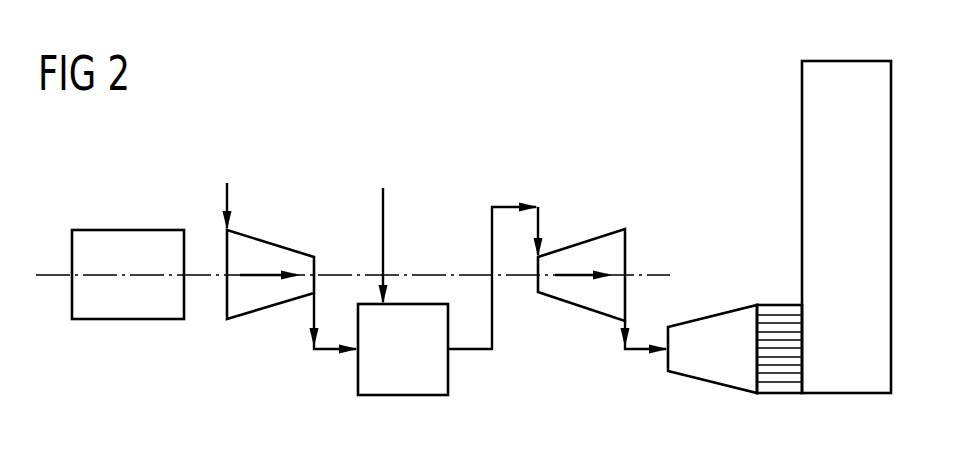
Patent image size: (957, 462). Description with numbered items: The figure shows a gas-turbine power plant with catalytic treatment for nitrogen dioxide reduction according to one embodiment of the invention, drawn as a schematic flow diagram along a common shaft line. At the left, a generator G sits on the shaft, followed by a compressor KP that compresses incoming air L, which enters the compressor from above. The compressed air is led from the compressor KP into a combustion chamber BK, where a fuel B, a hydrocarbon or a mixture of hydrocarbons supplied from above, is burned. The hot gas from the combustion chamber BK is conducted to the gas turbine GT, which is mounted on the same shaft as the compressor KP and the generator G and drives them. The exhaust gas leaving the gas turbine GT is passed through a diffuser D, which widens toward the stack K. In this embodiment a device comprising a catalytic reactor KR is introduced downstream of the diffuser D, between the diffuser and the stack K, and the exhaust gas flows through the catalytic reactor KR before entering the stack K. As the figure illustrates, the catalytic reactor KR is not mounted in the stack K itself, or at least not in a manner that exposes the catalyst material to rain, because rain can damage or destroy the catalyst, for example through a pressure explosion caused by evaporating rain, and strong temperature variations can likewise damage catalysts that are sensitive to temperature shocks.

The generator G is at (128, 298).
The air L is at (227, 190).
The compressor KP is at (292, 298).
The fuel B is at (383, 227).
The combustion chamber BK is at (448, 323).
The gas turbine GT is at (601, 280).
The diffuser D is at (712, 363).
The catalytic reactor KR is at (779, 370).
The stack K is at (831, 224).